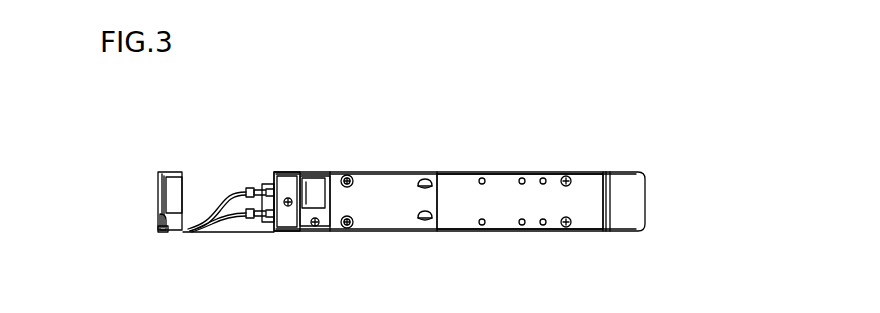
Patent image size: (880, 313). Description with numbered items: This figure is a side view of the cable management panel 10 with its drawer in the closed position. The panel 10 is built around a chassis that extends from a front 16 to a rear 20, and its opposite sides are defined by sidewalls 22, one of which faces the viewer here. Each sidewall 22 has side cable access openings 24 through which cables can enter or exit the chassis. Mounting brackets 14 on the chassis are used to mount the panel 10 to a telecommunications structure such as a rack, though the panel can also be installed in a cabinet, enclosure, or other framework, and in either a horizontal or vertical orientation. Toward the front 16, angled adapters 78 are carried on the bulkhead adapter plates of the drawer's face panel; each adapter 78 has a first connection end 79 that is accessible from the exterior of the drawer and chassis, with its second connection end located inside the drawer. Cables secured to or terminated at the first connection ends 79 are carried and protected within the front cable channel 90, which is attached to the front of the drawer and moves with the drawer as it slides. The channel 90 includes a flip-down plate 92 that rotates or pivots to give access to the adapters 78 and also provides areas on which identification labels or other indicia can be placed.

The cable management panel 10 is at (617, 145).
The mounting brackets 14 is at (372, 220).
The front 16 is at (128, 199).
The rear 20 is at (668, 200).
The sidewalls 22 is at (495, 210).
The side cable access openings 24 is at (311, 205).
The angled adapters 78 is at (248, 233).
The first connection end 79 is at (258, 187).
The front cable channel 90 is at (195, 172).
The flip-down plate 92 is at (163, 204).